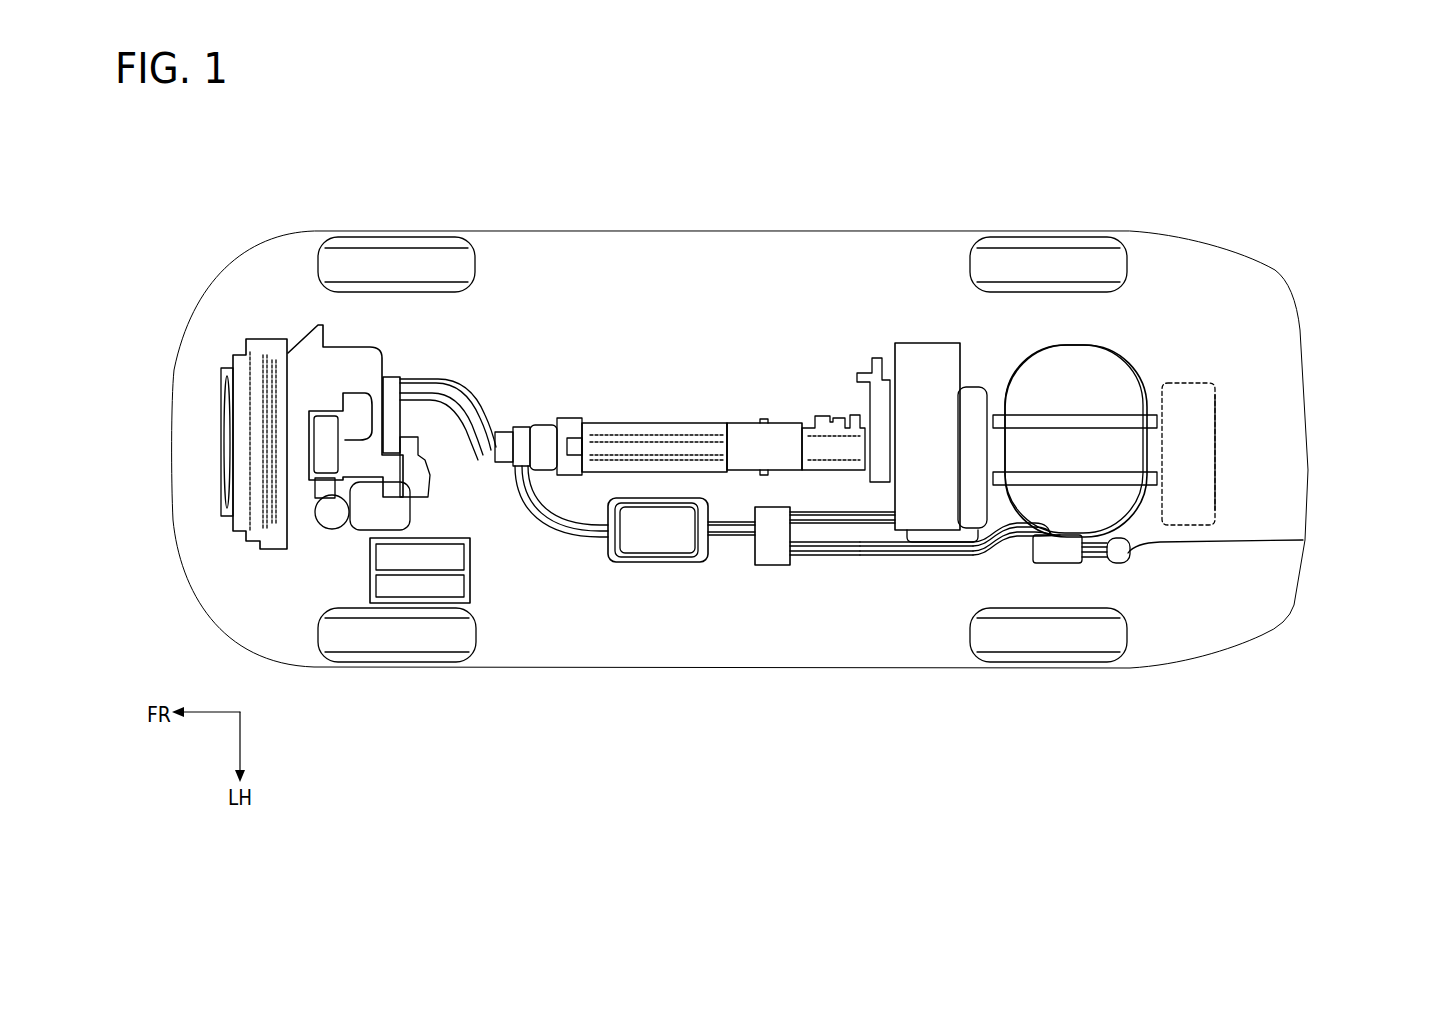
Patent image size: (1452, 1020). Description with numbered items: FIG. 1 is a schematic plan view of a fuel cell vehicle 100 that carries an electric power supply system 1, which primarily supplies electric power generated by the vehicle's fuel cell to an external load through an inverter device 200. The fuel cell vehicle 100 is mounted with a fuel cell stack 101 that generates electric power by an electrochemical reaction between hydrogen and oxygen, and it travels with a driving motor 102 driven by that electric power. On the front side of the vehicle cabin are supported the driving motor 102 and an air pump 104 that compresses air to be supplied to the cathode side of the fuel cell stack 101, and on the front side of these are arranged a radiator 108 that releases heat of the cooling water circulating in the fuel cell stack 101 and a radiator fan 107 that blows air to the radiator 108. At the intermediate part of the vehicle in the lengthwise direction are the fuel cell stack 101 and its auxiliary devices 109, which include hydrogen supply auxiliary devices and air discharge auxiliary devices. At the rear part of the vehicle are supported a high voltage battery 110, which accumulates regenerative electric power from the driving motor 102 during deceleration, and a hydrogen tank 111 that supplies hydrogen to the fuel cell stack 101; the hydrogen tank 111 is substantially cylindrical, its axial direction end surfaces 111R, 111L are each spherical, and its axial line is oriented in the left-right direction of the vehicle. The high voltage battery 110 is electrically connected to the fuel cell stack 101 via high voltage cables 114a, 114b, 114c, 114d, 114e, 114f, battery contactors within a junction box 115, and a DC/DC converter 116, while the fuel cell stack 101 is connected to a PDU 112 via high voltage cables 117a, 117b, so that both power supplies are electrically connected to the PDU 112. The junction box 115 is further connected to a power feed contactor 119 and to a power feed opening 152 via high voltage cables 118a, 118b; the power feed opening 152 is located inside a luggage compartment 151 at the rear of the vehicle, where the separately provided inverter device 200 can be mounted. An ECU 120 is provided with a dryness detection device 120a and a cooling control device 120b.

The electric power supply system 1 is at (1288, 384).
The fuel cell vehicle 100 is at (224, 254).
The fuel cell stack 101 is at (627, 446).
The driving motor 102 is at (405, 378).
The air pump 104 is at (365, 500).
The radiator fan 107 is at (225, 508).
The radiator 108 is at (228, 402).
The auxiliary devices 109 is at (773, 445).
The high voltage battery 110 is at (928, 375).
The hydrogen tank 111 is at (1099, 343).
The axial direction end surface 111R is at (1028, 353).
The axial direction end surface 111L is at (1023, 540).
The PDU 112 is at (397, 377).
The high voltage cable 114a is at (827, 543).
The high voltage cable 114b is at (812, 520).
The high voltage cable 114c is at (742, 537).
The high voltage cable 114d is at (730, 525).
The high voltage cable 114e is at (563, 533).
The high voltage cable 114f is at (547, 520).
The junction box 115 is at (773, 550).
The DC/DC converter 116 is at (643, 540).
The high voltage cable 117a is at (445, 402).
The high voltage cable 117b is at (422, 385).
The high voltage cable 118a is at (905, 548).
The high voltage cable 118b is at (895, 545).
The power feed contactor 119 is at (1057, 552).
The ECU 120 is at (405, 649).
The dryness detection device 120a is at (397, 560).
The cooling control device 120b is at (418, 590).
The luggage compartment 151 is at (1249, 407).
The power feed opening 152 is at (1303, 540).
The inverter device 200 is at (1200, 475).